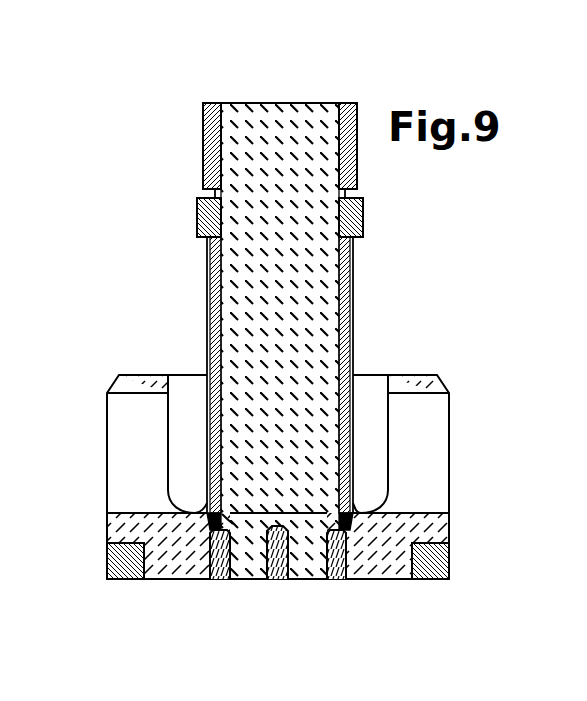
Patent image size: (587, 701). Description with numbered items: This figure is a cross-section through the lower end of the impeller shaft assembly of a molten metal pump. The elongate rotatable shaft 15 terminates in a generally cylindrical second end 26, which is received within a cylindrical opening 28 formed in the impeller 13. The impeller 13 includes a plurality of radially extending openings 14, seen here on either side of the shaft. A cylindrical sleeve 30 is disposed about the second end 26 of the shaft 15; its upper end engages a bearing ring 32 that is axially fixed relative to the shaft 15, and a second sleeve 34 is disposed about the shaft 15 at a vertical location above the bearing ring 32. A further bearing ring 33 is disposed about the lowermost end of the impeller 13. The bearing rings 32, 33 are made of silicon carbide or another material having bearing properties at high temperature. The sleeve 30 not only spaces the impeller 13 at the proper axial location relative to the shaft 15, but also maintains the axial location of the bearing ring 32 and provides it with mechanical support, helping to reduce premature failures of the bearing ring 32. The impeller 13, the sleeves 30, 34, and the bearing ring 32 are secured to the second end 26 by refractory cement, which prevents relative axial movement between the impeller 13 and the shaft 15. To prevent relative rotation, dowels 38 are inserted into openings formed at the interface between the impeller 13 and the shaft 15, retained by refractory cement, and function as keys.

The impeller 13 is at (125, 525).
The radially extending openings 14 is at (130, 447).
The shaft 15 is at (268, 103).
The second end 26 is at (403, 253).
The cylindrical opening 28 is at (225, 514).
The sleeve 30 is at (210, 333).
The bearing ring 32 is at (205, 215).
The bearing ring 33 is at (120, 562).
The second sleeve 34 is at (210, 150).
The dowels 38 is at (222, 581).